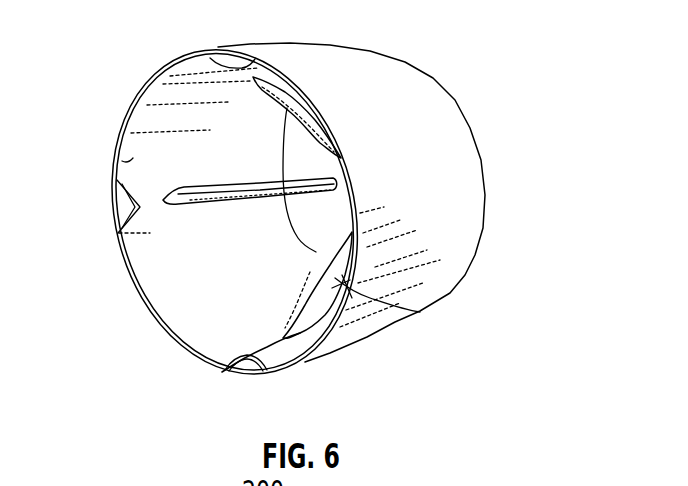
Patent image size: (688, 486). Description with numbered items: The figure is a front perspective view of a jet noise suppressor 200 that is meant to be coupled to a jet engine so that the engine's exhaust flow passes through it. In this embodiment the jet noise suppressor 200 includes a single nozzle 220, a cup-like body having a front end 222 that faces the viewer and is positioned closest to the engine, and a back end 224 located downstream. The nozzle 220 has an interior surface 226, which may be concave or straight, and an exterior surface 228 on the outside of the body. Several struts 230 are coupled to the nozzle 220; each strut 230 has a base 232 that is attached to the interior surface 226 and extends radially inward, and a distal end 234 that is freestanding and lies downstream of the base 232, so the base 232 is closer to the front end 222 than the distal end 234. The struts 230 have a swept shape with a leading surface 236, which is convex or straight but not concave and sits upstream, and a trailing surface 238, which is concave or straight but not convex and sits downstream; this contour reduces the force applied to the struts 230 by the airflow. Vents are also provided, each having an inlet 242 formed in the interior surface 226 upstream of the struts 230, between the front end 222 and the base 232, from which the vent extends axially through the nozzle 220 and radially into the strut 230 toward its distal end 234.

The jet noise suppressor 200 is at (469, 48).
The nozzle 220 is at (117, 163).
The front end 222 is at (127, 114).
The back end 224 is at (485, 213).
The interior surface 226 is at (165, 298).
The exterior surface 228 is at (360, 320).
The strut 230 is at (340, 245).
The base 232 is at (167, 206).
The distal end 234 is at (347, 180).
The leading surface 236 is at (315, 262).
The trailing surface 238 is at (421, 312).
The inlet 242 is at (116, 207).